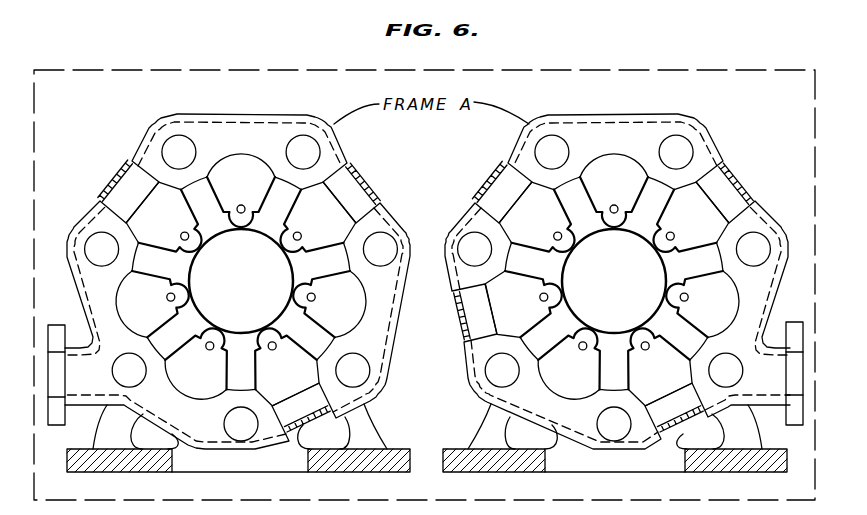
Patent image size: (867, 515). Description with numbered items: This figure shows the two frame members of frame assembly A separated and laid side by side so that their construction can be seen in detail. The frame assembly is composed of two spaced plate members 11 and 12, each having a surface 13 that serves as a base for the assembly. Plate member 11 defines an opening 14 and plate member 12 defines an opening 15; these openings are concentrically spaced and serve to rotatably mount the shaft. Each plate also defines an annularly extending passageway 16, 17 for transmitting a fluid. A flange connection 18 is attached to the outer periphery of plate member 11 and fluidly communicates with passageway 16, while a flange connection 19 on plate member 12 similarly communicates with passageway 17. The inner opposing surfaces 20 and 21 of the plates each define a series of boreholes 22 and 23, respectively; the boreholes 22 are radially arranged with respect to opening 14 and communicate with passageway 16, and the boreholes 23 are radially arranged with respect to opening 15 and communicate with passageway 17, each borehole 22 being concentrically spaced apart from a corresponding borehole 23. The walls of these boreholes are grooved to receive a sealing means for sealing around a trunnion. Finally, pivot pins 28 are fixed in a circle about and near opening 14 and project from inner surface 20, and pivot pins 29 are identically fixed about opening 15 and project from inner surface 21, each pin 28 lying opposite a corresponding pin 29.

The plate member 11 is at (262, 113).
The plate member 12 is at (613, 116).
The surface 13 is at (80, 462).
The opening 14 is at (212, 283).
The opening 15 is at (587, 295).
The passageway 16 is at (125, 193).
The passageway 17 is at (498, 192).
The flange connection 18 is at (57, 332).
The flange connection 19 is at (797, 335).
The inner surface 20 is at (302, 262).
The inner surface 21 is at (585, 234).
The boreholes 22 is at (172, 146).
The boreholes 23 is at (546, 150).
The pivot pins 28 is at (183, 236).
The pivot pins 29 is at (613, 205).